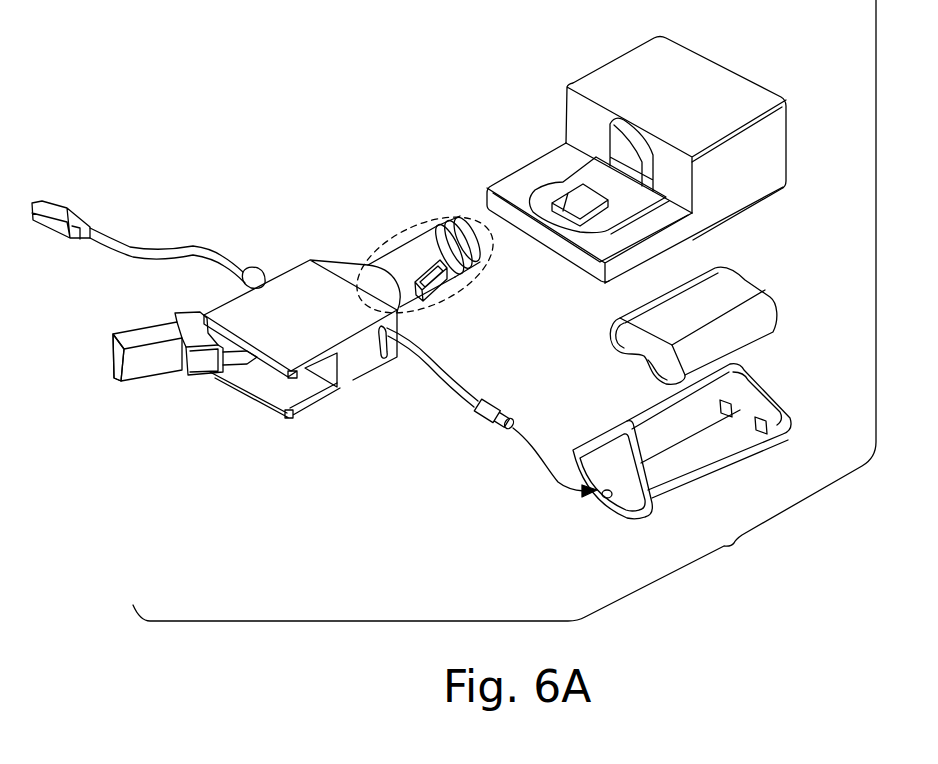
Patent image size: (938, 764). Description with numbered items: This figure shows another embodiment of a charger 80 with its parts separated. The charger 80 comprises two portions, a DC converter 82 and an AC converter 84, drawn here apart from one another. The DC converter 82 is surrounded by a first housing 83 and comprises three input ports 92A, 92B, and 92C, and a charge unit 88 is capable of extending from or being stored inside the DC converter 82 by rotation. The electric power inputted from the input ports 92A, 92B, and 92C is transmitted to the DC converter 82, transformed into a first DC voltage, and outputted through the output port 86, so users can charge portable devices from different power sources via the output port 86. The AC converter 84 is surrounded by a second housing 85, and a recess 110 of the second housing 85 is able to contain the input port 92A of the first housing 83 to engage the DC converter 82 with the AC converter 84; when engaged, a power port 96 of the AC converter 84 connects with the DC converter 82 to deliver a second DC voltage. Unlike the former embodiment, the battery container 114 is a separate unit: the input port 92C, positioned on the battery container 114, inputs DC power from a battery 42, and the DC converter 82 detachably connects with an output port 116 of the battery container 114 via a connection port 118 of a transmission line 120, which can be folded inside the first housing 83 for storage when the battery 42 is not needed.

The charger 80 is at (737, 543).
The DC converter 82 is at (306, 252).
The first housing 83 is at (352, 374).
The AC converter 84 is at (696, 67).
The second housing 85 is at (757, 183).
The output port 86 is at (43, 203).
The charge unit 88 is at (124, 332).
The input port 92A is at (417, 226).
The input port 92B is at (100, 376).
The input port 92C is at (727, 374).
The power port 96 is at (565, 203).
The recess 110 is at (618, 143).
The battery container 114 is at (683, 490).
The output port 116 is at (583, 492).
The connection port 118 is at (508, 415).
The transmission line 120 is at (433, 365).
The battery 42 is at (615, 327).